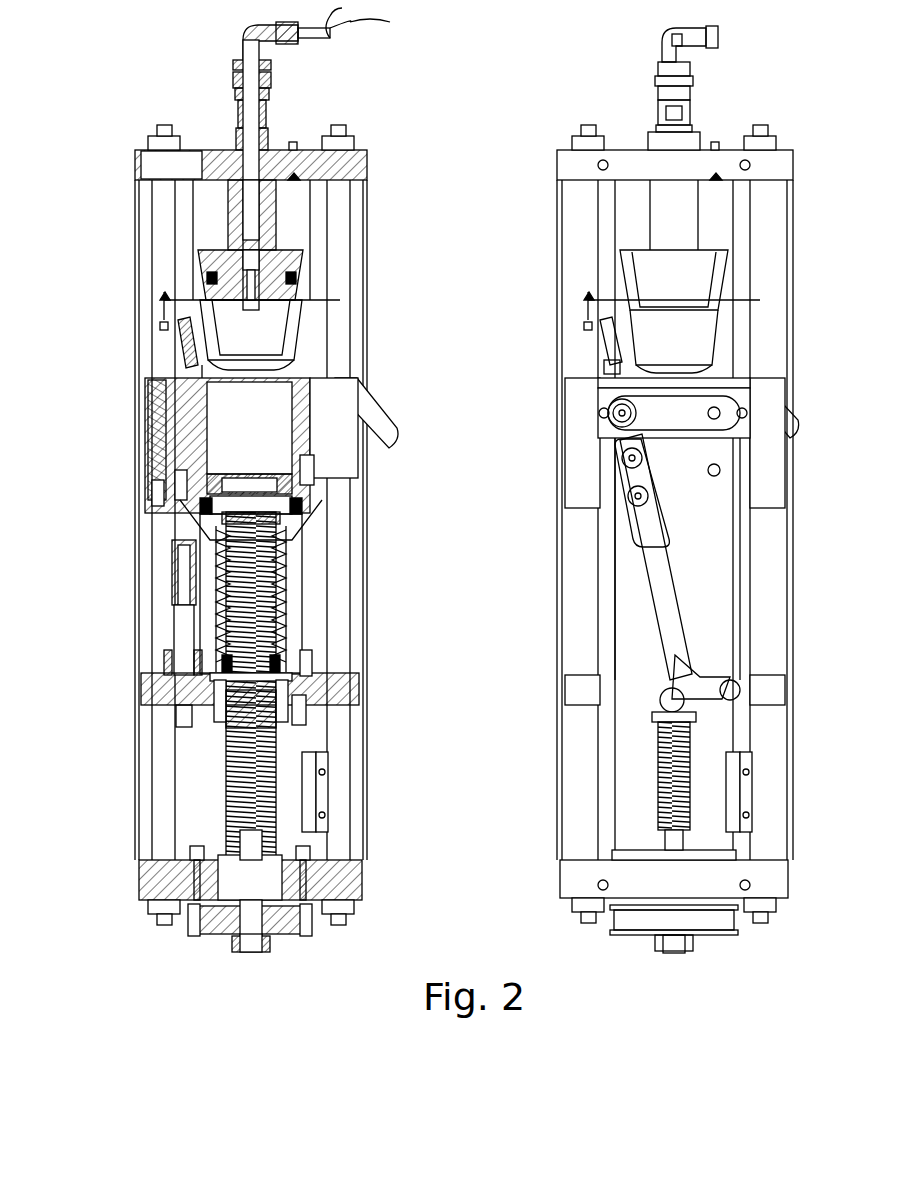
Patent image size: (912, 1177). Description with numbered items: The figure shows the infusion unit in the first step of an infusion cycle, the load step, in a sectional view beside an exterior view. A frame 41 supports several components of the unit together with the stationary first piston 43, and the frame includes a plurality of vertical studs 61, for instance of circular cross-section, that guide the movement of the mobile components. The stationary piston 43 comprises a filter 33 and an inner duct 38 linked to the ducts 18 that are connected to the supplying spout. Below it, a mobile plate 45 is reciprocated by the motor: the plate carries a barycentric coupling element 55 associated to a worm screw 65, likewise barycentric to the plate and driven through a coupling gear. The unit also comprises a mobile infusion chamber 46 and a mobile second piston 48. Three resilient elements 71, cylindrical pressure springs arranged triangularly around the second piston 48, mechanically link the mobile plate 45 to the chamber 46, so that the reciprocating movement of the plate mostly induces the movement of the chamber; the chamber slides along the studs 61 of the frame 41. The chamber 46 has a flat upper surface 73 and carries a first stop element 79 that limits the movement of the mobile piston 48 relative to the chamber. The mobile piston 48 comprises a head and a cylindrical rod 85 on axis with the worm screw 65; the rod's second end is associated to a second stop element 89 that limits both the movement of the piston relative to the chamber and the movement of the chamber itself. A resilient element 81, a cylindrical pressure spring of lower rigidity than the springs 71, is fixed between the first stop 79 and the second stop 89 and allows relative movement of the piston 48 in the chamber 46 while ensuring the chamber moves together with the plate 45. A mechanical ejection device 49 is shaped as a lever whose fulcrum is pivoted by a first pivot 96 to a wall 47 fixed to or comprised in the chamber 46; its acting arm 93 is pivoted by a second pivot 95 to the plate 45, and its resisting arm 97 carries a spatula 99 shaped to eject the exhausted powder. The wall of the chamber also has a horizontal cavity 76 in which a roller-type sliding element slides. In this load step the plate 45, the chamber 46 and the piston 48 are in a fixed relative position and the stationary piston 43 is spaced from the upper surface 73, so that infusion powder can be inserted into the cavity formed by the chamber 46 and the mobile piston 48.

The ducts 18 is at (342, 28).
The first piston 43 is at (207, 232).
The inner duct 38 is at (275, 228).
The filter 33 is at (272, 310).
The upper surface 73 is at (182, 370).
The infusion chamber 46 is at (175, 428).
The first stop element 79 is at (287, 520).
The resilient element 81 is at (287, 577).
The second piston 48 is at (305, 612).
The rod 85 is at (195, 565).
The resilient elements 71 is at (185, 622).
The second stop element 89 is at (190, 688).
The coupling element 55 is at (225, 720).
The studs 61 is at (160, 835).
The mobile plate 45 is at (303, 698).
The worm screw 65 is at (280, 774).
The frame 41 is at (342, 887).
The spatula 99 is at (622, 437).
The mechanical ejection device 49 is at (630, 575).
The resisting arm 97 is at (653, 592).
The cavity 76 is at (700, 415).
The wall 47 is at (712, 578).
The acting arm 93 is at (693, 677).
The second pivot 95 is at (740, 657).
The first pivot 96 is at (690, 723).